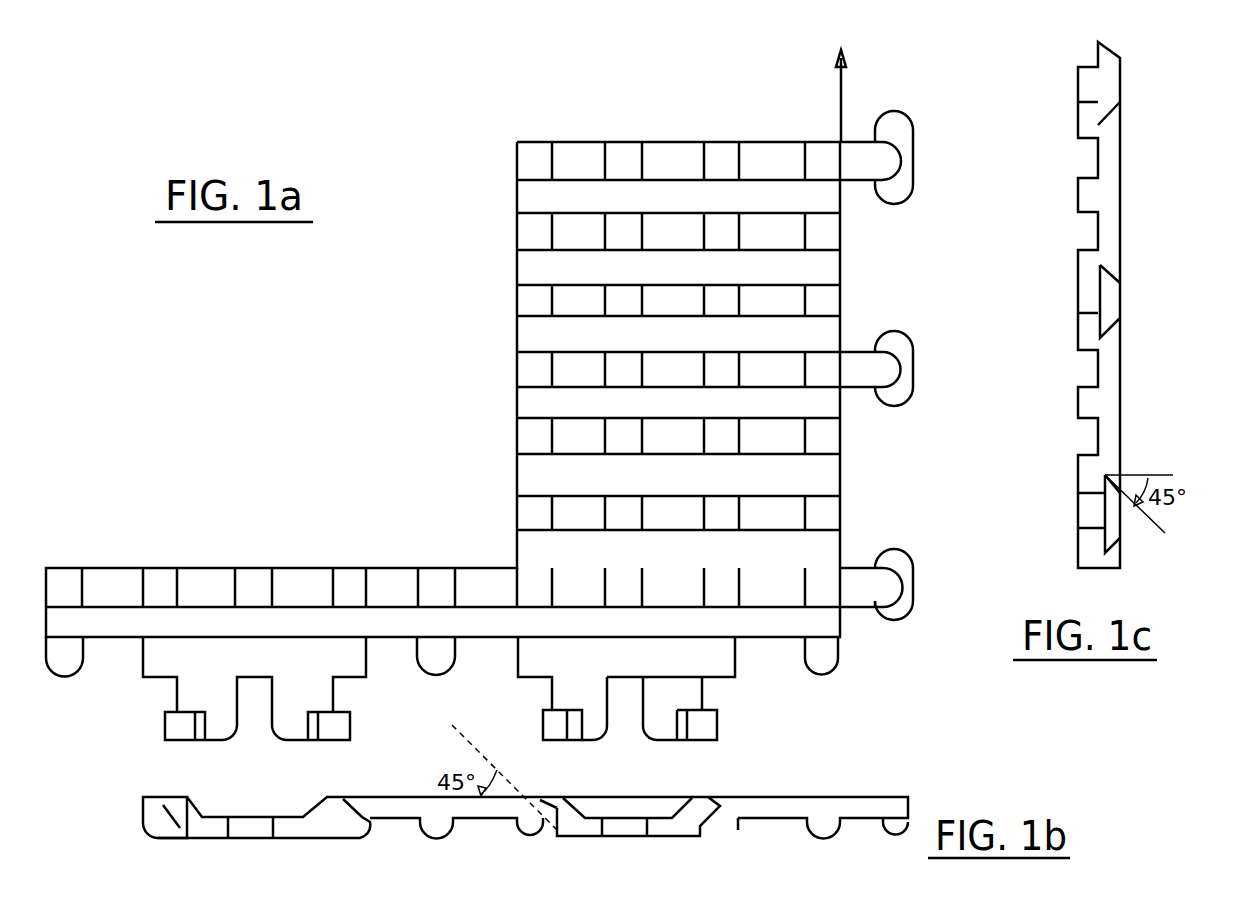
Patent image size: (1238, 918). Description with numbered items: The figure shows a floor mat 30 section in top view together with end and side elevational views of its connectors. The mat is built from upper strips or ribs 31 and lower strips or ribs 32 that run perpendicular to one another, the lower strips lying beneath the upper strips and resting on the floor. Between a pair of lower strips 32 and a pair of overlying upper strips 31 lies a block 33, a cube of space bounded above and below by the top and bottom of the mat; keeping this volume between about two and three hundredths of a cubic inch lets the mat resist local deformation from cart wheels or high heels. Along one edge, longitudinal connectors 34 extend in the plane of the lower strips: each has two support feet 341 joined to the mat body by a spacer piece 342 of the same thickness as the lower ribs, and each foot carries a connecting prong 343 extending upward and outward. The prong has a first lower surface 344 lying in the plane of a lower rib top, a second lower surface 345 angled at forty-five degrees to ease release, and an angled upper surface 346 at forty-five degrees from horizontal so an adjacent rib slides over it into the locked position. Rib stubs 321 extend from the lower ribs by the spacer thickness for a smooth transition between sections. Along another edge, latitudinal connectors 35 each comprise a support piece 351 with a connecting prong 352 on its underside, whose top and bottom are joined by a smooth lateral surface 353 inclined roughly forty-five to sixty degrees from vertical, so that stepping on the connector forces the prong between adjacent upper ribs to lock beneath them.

In FIG. 1a, the floor mat 30 is at (330, 455).
In FIG. 1a, the upper strips or ribs 31 is at (530, 197).
In FIG. 1c, the upper strips or ribs 31 is at (1082, 415).
In FIG. 1a, the lower strips or ribs 32 is at (530, 150).
In FIG. 1b, the lower strips or ribs 32 is at (537, 830).
In FIG. 1c, the lower strips or ribs 32 is at (1112, 408).
In FIG. 1a, the block (perforation volume) 33 is at (575, 150).
In FIG. 1a, the longitudinal connector 34 is at (215, 668).
In FIG. 1a, the latitudinal connector 35 is at (912, 182).
In FIG. 1c, the latitudinal connector 35 is at (1090, 512).
In FIG. 1a, the rib stubs 321 is at (68, 668).
In FIG. 1a, the support feet 341 is at (600, 725).
In FIG. 1a, the spacer piece 342 is at (725, 645).
In FIG. 1a, the connecting prong 343 is at (705, 724).
In FIG. 1b, the connecting prong 343 is at (365, 828).
In FIG. 1b, the first lower surface 344 is at (170, 830).
In FIG. 1b, the second lower surface 345 is at (150, 820).
In FIG. 1b, the angled upper surface 346 is at (713, 797).
In FIG. 1a, the support piece 351 is at (856, 150).
In FIG. 1a, the connecting prong 352 is at (906, 136).
In FIG. 1c, the connecting prong 352 is at (1113, 95).
In FIG. 1c, the lateral surface 353 is at (1112, 45).